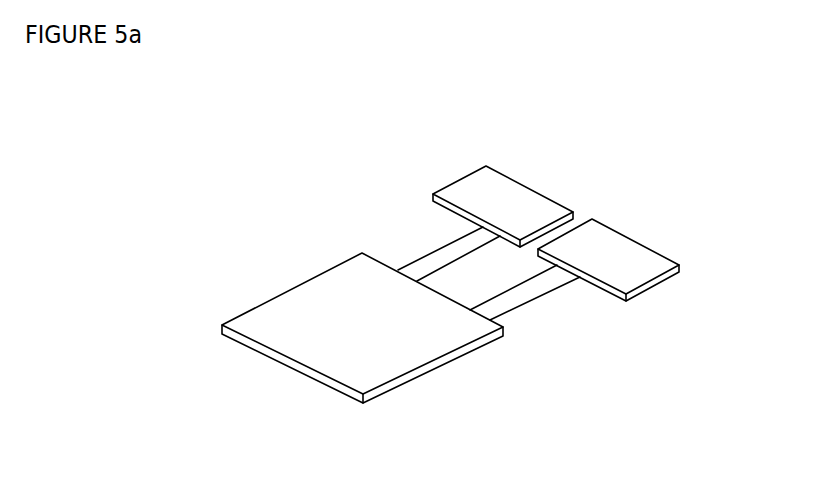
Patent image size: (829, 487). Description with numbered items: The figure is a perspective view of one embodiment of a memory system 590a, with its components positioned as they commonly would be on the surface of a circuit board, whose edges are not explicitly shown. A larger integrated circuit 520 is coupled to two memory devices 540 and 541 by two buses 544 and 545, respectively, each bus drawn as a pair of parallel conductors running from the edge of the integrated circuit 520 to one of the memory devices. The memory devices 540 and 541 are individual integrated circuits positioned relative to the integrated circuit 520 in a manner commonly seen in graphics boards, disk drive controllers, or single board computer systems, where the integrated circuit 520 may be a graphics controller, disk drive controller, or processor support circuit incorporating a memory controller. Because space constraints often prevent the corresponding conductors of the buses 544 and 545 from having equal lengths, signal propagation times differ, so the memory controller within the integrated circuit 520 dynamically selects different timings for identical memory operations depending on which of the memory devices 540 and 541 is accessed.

The memory system 590a is at (147, 116).
The integrated circuit 520 is at (295, 285).
The memory device 540 is at (470, 173).
The memory device 541 is at (627, 235).
The bus 544 is at (430, 238).
The bus 545 is at (542, 303).